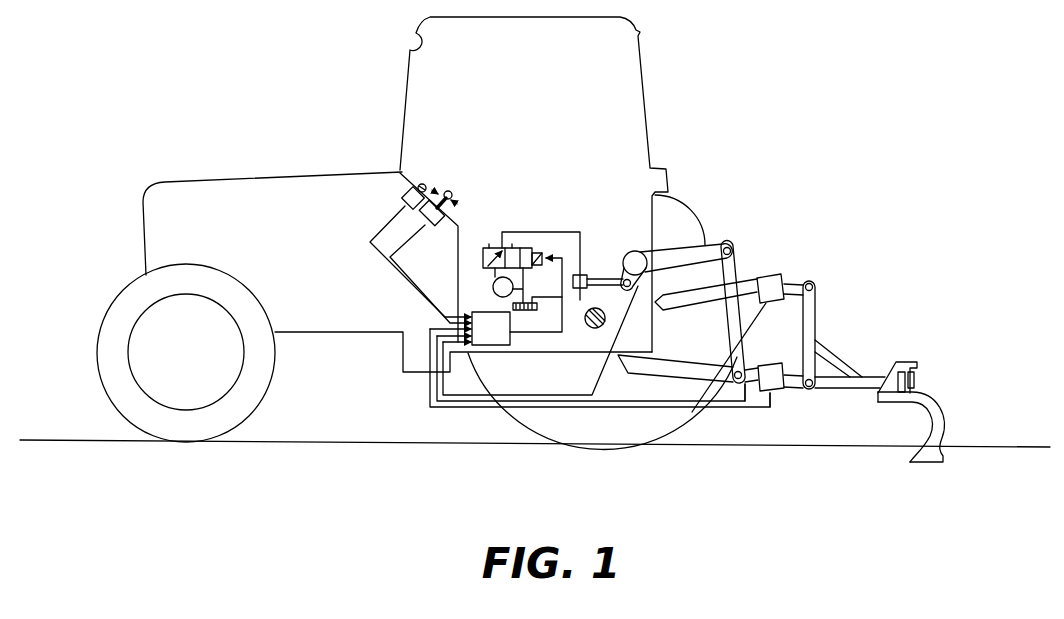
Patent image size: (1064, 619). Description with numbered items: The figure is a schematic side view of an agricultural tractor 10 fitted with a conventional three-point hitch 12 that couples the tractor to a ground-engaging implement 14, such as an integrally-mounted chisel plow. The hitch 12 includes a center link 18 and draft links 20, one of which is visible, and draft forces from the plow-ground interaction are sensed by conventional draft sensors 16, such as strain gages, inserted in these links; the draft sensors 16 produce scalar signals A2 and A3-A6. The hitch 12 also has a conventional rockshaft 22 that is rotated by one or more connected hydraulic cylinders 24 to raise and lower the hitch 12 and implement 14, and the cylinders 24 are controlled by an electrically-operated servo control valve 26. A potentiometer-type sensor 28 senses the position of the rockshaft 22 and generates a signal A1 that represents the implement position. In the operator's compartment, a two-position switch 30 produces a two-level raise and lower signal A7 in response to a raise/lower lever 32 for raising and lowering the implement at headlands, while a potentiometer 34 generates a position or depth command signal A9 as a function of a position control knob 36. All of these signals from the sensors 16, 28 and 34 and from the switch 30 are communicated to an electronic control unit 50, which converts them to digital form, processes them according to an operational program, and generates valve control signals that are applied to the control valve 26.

The agricultural tractor 10 is at (188, 76).
The hitch 12 is at (738, 227).
The ground-engaging implement 14 is at (926, 417).
The draft sensors 16 is at (773, 302).
The center link 18 is at (800, 280).
The draft links 20 is at (680, 374).
The rockshaft 22 is at (638, 251).
The hydraulic cylinders 24 is at (580, 274).
The control valve 26 is at (496, 246).
The potentiometer-type sensor 28 is at (648, 280).
The two-position switch 30 is at (445, 214).
The raise/lower lever 32 is at (448, 190).
The potentiometer 34 is at (403, 194).
The position control knob 36 is at (423, 184).
The electronic control unit 50 is at (510, 340).
The rockshaft position signal A1 is at (608, 307).
The draft sensor signal A2 is at (725, 393).
The draft sensor signals A3-A6 is at (734, 413).
The raise and lower signal A7 is at (430, 274).
The depth command signal A9 is at (412, 261).